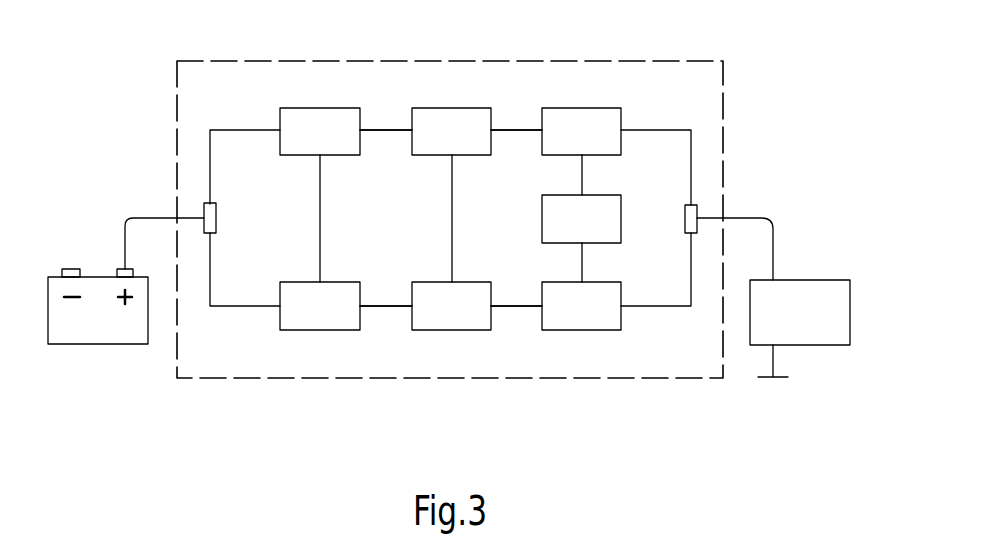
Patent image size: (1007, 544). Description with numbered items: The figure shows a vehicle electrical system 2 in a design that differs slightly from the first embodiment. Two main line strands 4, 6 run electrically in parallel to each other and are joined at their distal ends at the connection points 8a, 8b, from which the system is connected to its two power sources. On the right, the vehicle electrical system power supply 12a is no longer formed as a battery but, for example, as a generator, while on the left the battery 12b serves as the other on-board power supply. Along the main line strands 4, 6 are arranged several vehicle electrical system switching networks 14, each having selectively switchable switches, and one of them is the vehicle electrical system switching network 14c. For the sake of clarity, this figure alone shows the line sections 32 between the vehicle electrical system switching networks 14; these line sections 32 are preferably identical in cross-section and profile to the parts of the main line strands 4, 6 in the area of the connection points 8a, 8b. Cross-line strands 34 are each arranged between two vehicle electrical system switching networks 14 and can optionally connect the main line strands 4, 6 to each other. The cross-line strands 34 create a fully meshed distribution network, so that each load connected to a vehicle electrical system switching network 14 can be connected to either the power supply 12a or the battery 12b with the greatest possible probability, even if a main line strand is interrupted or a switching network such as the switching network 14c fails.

The vehicle electrical system 2 is at (588, 61).
The main line strand 4 is at (245, 130).
The main line strand 6 is at (243, 306).
The connection point 8a is at (685, 218).
The connection point 8b is at (216, 218).
The vehicle electrical system power supply 12a is at (806, 346).
The battery 12b is at (88, 345).
The vehicle electrical system switching network 14 is at (334, 144).
The vehicle electrical system switching network 14c is at (301, 319).
The line section 32 is at (398, 133).
The cross-line strand 34 is at (321, 220).